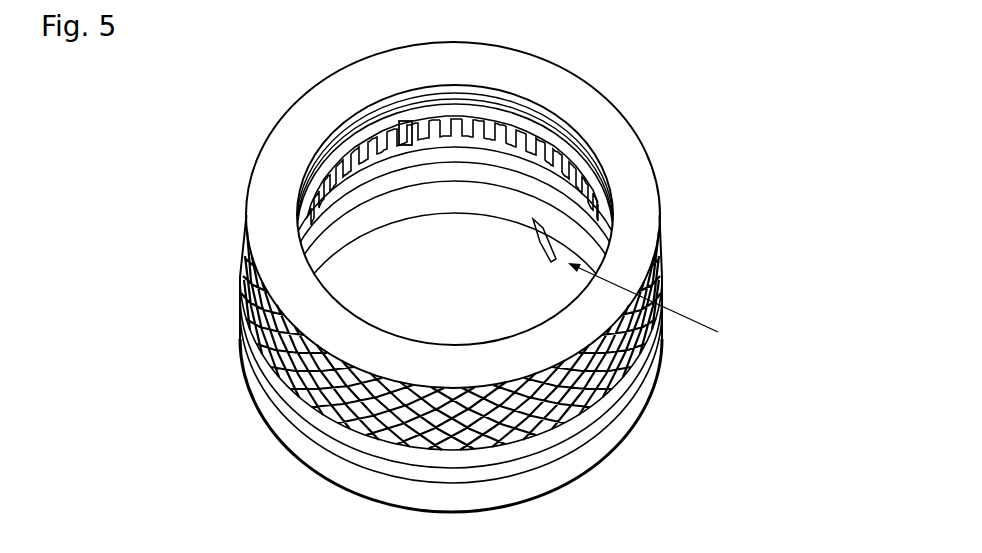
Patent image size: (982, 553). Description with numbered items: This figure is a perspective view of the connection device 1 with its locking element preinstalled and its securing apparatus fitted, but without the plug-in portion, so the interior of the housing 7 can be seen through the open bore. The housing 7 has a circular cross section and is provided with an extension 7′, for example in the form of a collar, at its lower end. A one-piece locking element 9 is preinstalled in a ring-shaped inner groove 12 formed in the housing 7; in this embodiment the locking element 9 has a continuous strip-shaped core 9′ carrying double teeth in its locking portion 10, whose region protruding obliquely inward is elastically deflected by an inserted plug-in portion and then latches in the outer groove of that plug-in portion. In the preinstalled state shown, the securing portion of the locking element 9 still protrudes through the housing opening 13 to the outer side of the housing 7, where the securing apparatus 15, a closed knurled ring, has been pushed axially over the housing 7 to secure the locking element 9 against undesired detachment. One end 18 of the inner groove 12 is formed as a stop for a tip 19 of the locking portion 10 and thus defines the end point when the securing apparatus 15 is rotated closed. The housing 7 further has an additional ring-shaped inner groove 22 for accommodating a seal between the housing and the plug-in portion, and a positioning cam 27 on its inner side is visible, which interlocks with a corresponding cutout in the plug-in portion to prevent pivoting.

The connection device 1 is at (176, 115).
The housing 7 is at (362, 441).
The extension 7′ is at (580, 462).
The locking element 9 is at (397, 130).
The strip-shaped core 9′ is at (512, 147).
The locking portion 10 is at (573, 173).
The inner groove 12 is at (385, 154).
The housing opening 13 is at (409, 145).
The securing apparatus 15 is at (352, 388).
The end of the inner groove 18 is at (428, 137).
The tip of the locking portion 19 is at (441, 137).
The additional inner groove 22 is at (563, 196).
The positioning cam 27 is at (658, 304).